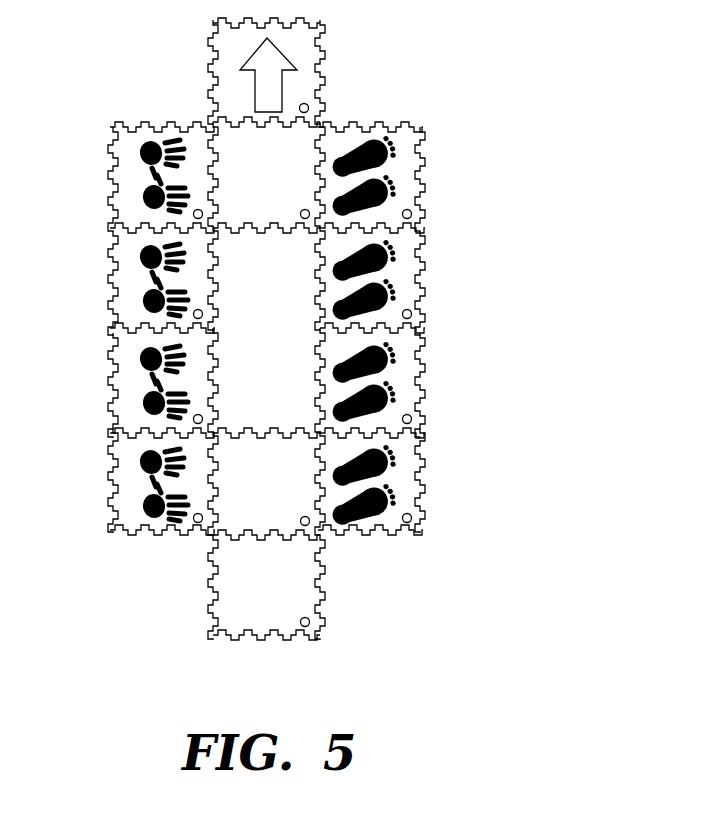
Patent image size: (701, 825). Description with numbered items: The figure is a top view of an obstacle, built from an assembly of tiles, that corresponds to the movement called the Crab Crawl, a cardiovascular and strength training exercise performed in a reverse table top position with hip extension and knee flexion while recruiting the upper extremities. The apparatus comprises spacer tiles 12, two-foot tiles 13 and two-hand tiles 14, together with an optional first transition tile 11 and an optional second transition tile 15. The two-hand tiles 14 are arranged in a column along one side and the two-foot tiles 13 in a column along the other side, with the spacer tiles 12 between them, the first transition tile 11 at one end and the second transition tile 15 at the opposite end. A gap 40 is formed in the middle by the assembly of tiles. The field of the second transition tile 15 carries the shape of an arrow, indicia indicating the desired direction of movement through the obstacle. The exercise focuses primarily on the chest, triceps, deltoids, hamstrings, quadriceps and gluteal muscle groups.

The second transition tile 15 is at (316, 73).
The two-hand tiles 14 is at (119, 473).
The two-foot tiles 13 is at (415, 484).
The spacer tiles 12 is at (255, 438).
The gap 40 is at (284, 333).
The first transition tile 11 is at (315, 584).